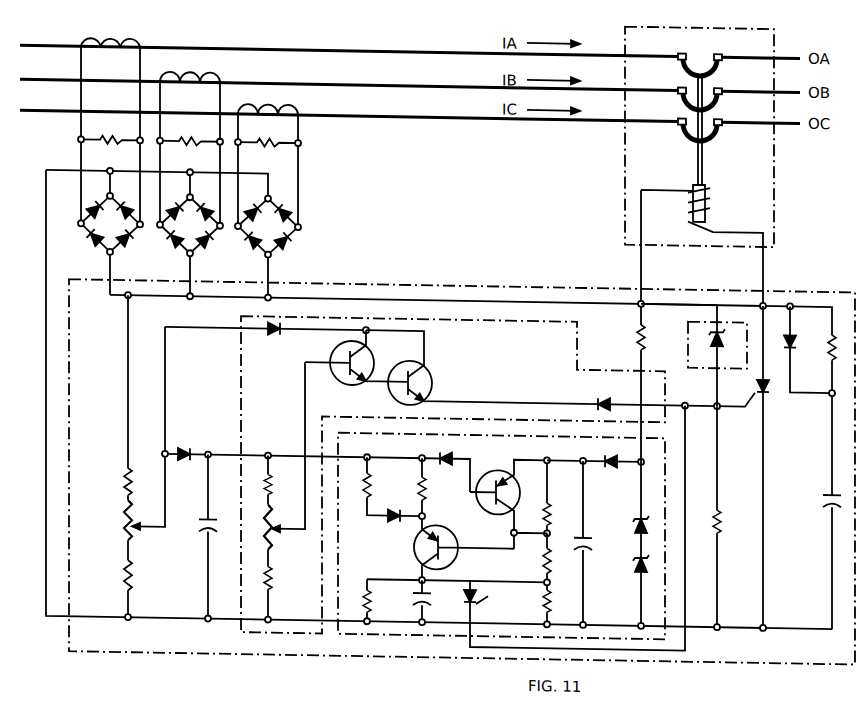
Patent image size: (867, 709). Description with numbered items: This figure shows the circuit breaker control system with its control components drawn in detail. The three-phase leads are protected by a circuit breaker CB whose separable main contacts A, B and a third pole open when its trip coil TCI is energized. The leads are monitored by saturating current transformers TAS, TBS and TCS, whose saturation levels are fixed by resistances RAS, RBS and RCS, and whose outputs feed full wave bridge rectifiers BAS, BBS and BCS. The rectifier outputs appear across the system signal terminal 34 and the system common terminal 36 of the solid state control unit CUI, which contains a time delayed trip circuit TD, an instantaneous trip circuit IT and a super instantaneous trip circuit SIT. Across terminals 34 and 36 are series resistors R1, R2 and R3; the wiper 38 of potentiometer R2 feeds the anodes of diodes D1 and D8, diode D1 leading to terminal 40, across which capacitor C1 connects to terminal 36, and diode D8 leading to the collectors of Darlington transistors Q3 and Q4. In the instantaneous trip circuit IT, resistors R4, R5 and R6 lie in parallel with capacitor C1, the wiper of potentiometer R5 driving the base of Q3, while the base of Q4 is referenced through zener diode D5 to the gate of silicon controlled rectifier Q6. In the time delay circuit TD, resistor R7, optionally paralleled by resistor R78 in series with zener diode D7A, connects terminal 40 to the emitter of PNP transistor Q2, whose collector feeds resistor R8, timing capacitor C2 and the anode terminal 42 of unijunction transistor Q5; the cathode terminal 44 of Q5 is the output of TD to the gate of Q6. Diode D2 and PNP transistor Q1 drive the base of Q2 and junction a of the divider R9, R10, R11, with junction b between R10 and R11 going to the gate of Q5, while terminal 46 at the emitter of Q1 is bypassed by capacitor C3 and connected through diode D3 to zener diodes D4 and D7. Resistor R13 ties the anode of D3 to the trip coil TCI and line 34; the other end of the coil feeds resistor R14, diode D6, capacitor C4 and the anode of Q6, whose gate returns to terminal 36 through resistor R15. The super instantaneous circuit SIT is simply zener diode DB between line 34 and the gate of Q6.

The upper output terminal 34 is at (118, 294).
The lower output terminal 36 is at (53, 616).
The movable wiper 38 is at (147, 525).
The line or terminal 40 is at (208, 447).
The anode terminal 42 is at (458, 571).
The cathode terminal 44 is at (467, 598).
The terminal 46 is at (531, 451).
The saturating current transformer TAS is at (131, 36).
The saturating current transformer TBS is at (211, 66).
The saturating current transformer TCS is at (290, 97).
The saturation level fixing resistance RAS is at (122, 133).
The saturation level fixing resistance RBS is at (202, 133).
The saturation level fixing resistance RCS is at (280, 133).
The full wave bridge rectifier BAS is at (103, 250).
The full wave bridge rectifier BBS is at (183, 252).
The full wave bridge rectifier BCS is at (261, 251).
The circuit breaker CB is at (625, 142).
The main contact A is at (707, 43).
The main contact B is at (712, 78).
The trip coil TCI is at (718, 189).
The control unit CUI is at (500, 278).
The instantaneous trip circuit IT is at (241, 316).
The time delayed trip circuit TD is at (666, 628).
The super instantaneous trip circuit SIT is at (690, 310).
The zener diode DB is at (707, 326).
The resistor R1 is at (123, 470).
The potentiometer R2 is at (122, 521).
The resistor R3 is at (120, 574).
The resistor R4 is at (272, 482).
The potentiometer R5 is at (274, 534).
The resistor R6 is at (274, 574).
The resistor R7 is at (424, 488).
The resistor R78 is at (383, 475).
The resistor R8 is at (365, 588).
The resistor R9 is at (550, 496).
The resistor R10 is at (545, 548).
The resistor R11 is at (550, 603).
The resistor R13 is at (637, 320).
The resistor R14 is at (830, 333).
The resistor R15 is at (719, 506).
The capacitor C1 is at (226, 518).
The timing capacitor C2 is at (417, 600).
The capacitor C3 is at (600, 531).
The capacitor C4 is at (824, 481).
The diode D1 is at (188, 459).
The diode D2 is at (452, 447).
The diode D3 is at (605, 447).
The zener diode D4 is at (637, 501).
The zener diode D5 is at (618, 378).
The diode D6 is at (812, 314).
The zener diode D7 is at (635, 546).
The zener diode D7A is at (389, 513).
The diode D8 is at (276, 331).
The PNP transistor Q1 is at (501, 464).
The PNP transistor Q2 is at (423, 560).
The transistor Q3 is at (333, 346).
The transistor Q4 is at (432, 369).
The unijunction transistor Q5 is at (574, 526).
The silicon controlled rectifier Q6 is at (755, 372).
The junction point a is at (552, 524).
The junction point b is at (552, 573).